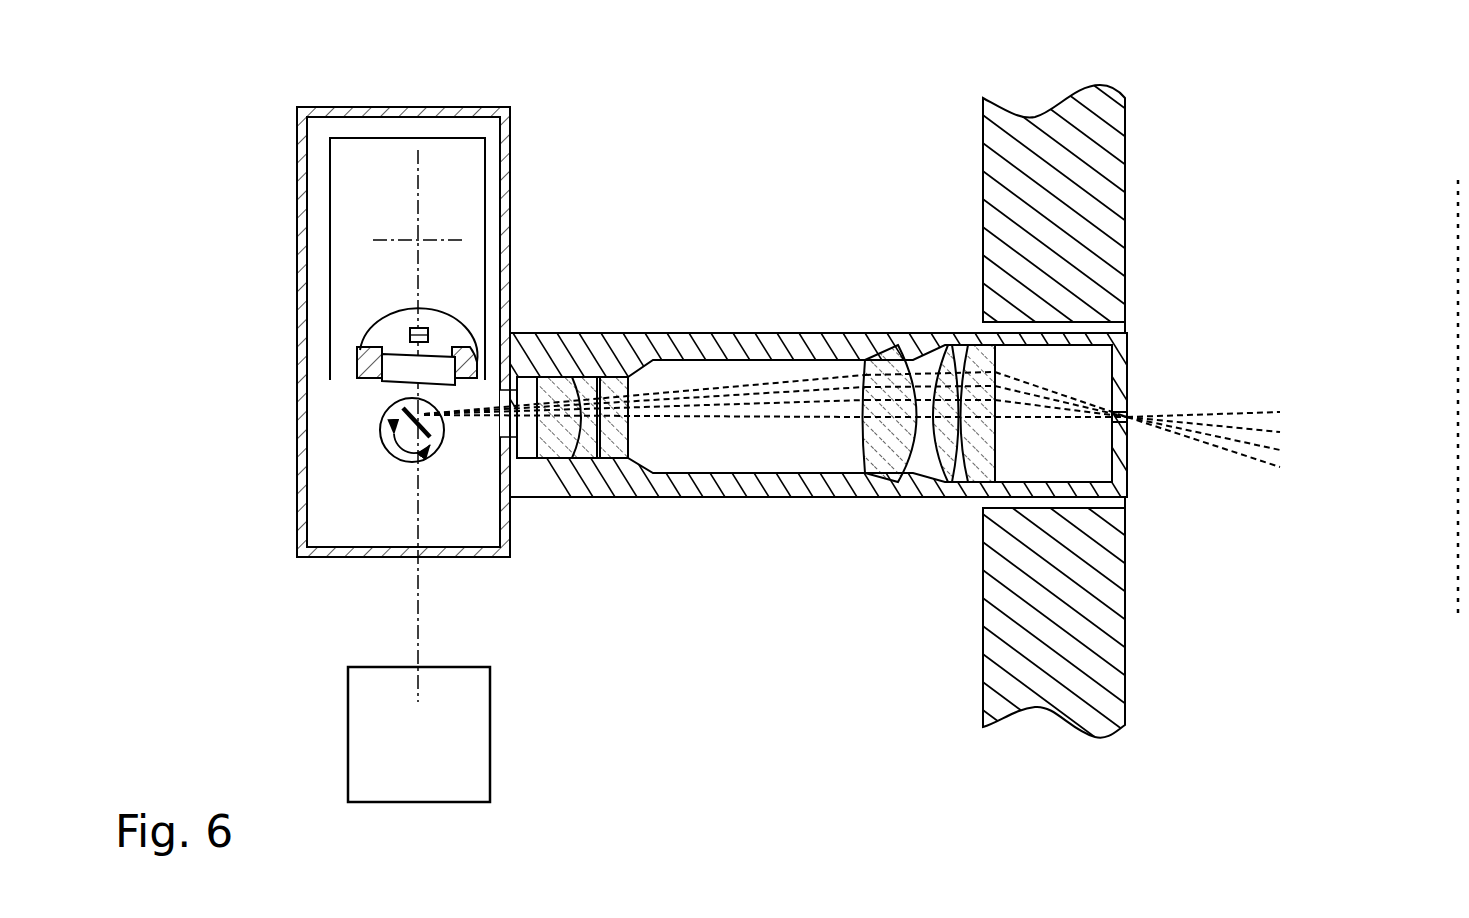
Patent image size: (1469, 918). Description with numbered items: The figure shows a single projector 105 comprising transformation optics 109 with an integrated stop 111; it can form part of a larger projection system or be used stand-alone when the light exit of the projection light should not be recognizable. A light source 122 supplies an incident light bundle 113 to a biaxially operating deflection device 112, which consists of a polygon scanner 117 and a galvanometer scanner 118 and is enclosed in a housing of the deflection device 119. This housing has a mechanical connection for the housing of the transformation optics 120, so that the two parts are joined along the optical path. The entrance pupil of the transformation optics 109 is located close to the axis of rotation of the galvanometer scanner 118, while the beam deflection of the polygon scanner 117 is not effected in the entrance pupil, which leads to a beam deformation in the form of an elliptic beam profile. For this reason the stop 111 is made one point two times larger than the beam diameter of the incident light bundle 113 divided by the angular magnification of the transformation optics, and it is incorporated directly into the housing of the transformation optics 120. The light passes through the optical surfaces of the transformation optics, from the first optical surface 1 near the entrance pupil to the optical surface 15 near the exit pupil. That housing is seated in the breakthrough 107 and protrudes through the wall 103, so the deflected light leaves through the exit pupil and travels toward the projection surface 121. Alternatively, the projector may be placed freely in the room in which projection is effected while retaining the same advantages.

The optical surface 1 is at (433, 427).
The optical surface 15 is at (1142, 402).
The wall 103 is at (1087, 205).
The projector 105 is at (673, 127).
The breakthrough 107 is at (1082, 325).
The transformation optics 109 is at (830, 305).
The stop 111 is at (1128, 430).
The biaxially operating deflection device 112 is at (355, 420).
The incident light bundle 113 is at (420, 608).
The polygon scanner 117 is at (393, 328).
The galvanometer scanner 118 is at (382, 417).
The housing of the deflection device 119 is at (510, 300).
The housing of the transformation optics 120 is at (905, 345).
The projection surface 121 is at (1457, 517).
The light source 122 is at (490, 703).